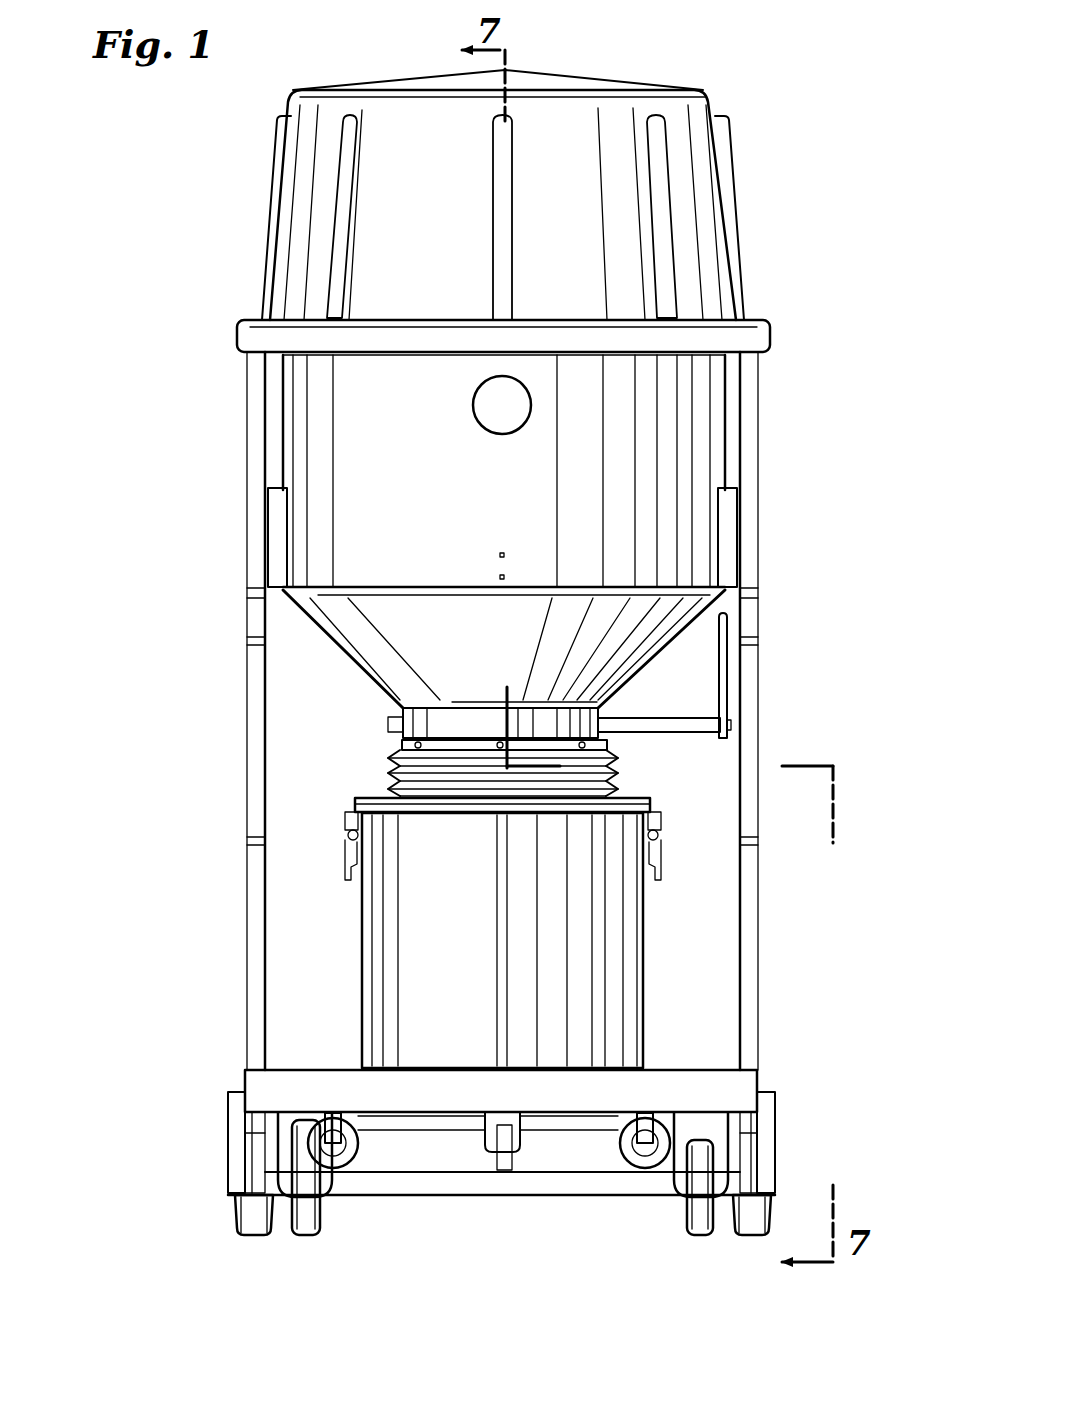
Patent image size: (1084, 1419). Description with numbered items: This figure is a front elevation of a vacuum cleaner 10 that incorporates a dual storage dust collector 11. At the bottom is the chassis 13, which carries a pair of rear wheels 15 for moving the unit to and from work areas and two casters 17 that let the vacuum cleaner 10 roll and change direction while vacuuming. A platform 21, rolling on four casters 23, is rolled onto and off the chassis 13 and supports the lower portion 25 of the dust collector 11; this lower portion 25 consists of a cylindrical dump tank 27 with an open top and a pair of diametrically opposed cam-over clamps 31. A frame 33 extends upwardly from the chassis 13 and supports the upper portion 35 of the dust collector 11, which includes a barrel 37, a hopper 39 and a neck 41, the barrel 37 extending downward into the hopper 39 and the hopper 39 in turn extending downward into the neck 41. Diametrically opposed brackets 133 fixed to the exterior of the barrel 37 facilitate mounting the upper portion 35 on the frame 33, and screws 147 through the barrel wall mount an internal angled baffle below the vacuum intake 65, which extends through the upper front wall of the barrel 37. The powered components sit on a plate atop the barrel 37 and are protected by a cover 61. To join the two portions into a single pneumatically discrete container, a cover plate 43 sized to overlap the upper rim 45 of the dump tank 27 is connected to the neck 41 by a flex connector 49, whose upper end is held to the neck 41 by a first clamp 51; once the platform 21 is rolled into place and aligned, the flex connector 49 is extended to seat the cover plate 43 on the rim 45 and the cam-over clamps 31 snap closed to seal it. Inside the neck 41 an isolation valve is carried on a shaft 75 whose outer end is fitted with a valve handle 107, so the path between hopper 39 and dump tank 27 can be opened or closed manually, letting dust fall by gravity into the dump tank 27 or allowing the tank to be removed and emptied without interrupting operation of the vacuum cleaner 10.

The vacuum cleaner 10 is at (220, 197).
The dual storage dust collector 11 is at (213, 712).
The chassis 13 is at (255, 1158).
The rear wheels 15 is at (250, 1220).
The casters 17 is at (312, 1218).
The platform 21 is at (560, 1135).
The casters 23 is at (348, 1142).
The lower portion 25 is at (187, 785).
The dump tank 27 is at (368, 973).
The cam-over clamps 31 is at (347, 850).
The frame 33 is at (257, 940).
The upper portion 35 is at (193, 617).
The barrel 37 is at (727, 418).
The hopper 39 is at (327, 637).
The neck 41 is at (403, 705).
The cover plate 43 is at (353, 800).
The upper rim 45 is at (650, 800).
The flex connector 49 is at (393, 777).
The first clamp 51 is at (607, 748).
The cover 61 is at (618, 82).
The vacuum intake 65 is at (480, 410).
The shaft 75 is at (675, 712).
The valve handle 107 is at (728, 676).
The brackets 133 is at (273, 537).
The screws 147 is at (500, 577).